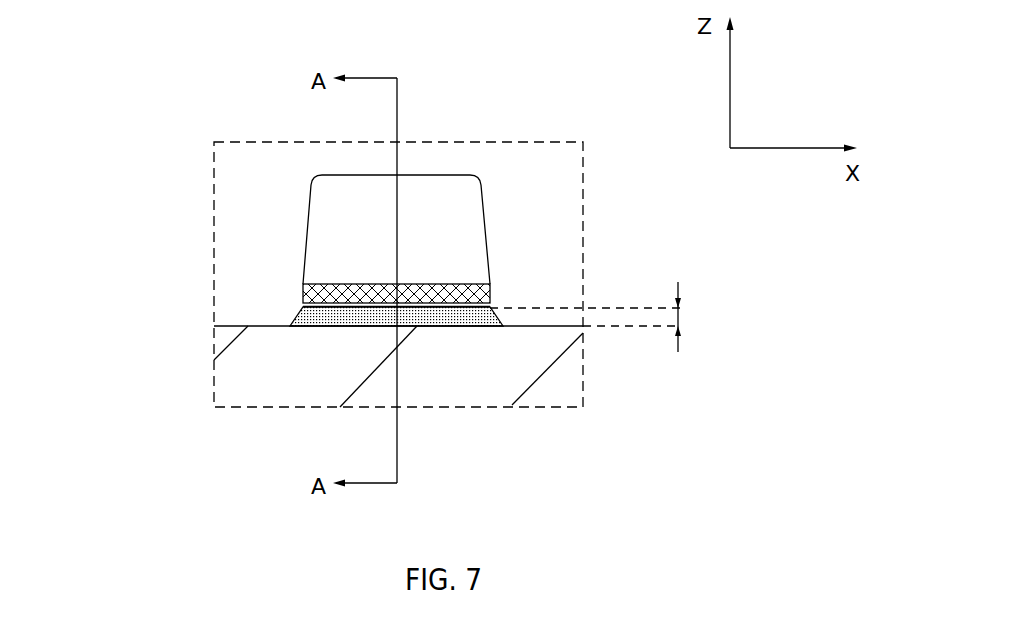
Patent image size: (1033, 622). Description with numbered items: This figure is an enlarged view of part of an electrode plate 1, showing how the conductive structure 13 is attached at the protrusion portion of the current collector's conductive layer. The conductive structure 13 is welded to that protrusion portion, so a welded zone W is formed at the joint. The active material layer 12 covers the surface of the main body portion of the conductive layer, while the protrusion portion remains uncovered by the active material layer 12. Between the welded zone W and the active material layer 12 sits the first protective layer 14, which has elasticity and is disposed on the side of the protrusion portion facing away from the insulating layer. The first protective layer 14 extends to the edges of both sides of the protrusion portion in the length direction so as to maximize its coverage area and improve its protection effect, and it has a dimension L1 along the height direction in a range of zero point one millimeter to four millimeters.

The electrode plate 1 is at (114, 165).
The active material layer 12 is at (484, 372).
The conductive structure 13 is at (460, 243).
The first protective layer 14 is at (295, 318).
The welded zone W is at (346, 262).
The dimension of the first protective layer L1 is at (602, 317).